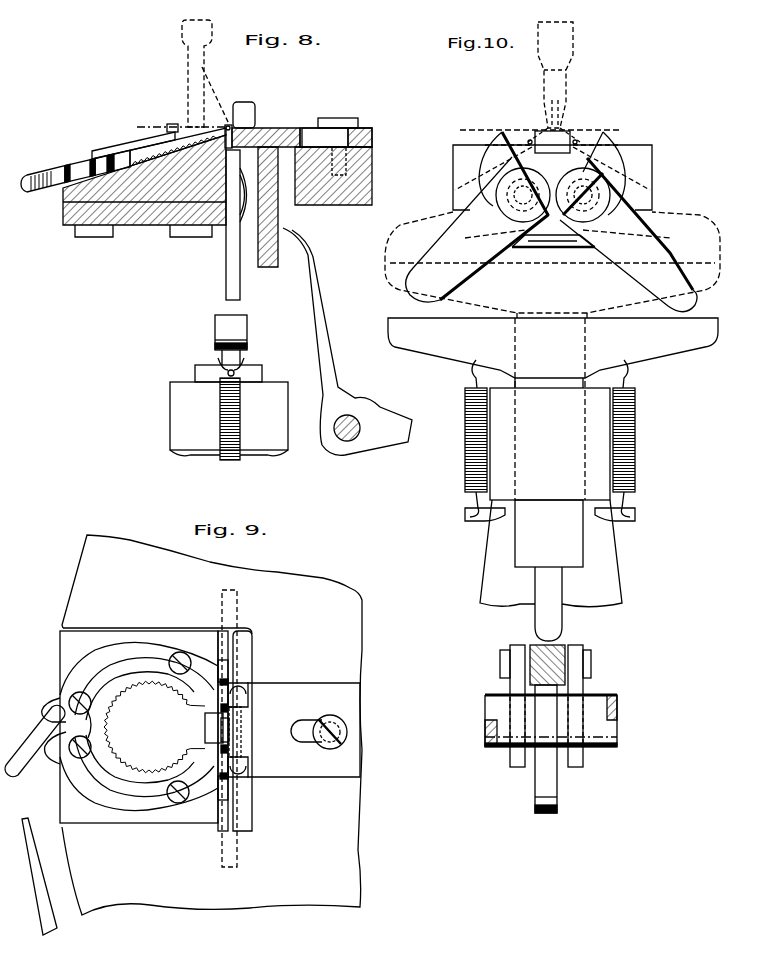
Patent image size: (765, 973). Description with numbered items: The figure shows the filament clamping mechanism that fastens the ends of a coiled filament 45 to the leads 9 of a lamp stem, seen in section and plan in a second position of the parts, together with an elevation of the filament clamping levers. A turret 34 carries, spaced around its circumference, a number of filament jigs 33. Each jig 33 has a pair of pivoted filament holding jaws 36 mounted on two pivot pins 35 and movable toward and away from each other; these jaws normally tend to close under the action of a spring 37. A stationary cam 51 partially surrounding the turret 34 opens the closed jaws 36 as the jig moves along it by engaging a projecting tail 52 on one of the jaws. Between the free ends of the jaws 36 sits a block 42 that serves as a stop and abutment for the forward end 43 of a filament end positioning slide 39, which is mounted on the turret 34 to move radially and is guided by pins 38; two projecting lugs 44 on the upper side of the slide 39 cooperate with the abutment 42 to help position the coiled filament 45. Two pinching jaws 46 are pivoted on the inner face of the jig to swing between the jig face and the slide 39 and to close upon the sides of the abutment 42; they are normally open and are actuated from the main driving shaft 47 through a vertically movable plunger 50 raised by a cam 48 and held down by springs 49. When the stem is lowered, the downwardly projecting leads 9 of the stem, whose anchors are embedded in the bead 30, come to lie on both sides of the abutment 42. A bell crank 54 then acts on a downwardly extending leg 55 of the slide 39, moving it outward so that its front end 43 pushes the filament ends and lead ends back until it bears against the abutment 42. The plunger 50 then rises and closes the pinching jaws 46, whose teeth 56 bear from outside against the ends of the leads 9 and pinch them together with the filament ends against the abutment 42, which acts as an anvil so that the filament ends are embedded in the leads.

In FIG. 9, the leads 9 is at (236, 712).
In FIG. 10, the bead 30 is at (566, 124).
In FIG. 8, the filament jig 33 is at (63, 199).
In FIG. 10, the filament jig 33 is at (453, 158).
In FIG. 9, the filament jig 33 is at (66, 652).
In FIG. 8, the turret 34 is at (332, 206).
In FIG. 9, the turret 34 is at (85, 548).
In FIG. 8, the pivot pins 35 is at (80, 166).
In FIG. 9, the pivot pins 35 is at (50, 706).
In FIG. 8, the filament holding jaws 36 is at (110, 154).
In FIG. 9, the filament holding jaws 36 is at (192, 657).
In FIG. 8, the spring 37 is at (120, 148).
In FIG. 9, the spring 37 is at (142, 650).
In FIG. 8, the pins 38 is at (335, 122).
In FIG. 9, the pins 38 is at (332, 750).
In FIG. 8, the filament end positioning slide 39 is at (290, 130).
In FIG. 9, the filament end positioning slide 39 is at (312, 690).
In FIG. 10, the block 42 is at (552, 154).
In FIG. 9, the block 42 is at (204, 727).
In FIG. 8, the forward end 43 is at (240, 130).
In FIG. 9, the forward end 43 is at (236, 740).
In FIG. 8, the projecting lugs 44 is at (249, 105).
In FIG. 9, the projecting lugs 44 is at (247, 692).
In FIG. 8, the coiled filament 45 is at (150, 158).
In FIG. 9, the coiled filament 45 is at (148, 687).
In FIG. 8, the pinching jaws 46 is at (225, 256).
In FIG. 10, the pinching jaws 46 is at (497, 185).
In FIG. 10, the main driving shaft 47 is at (600, 748).
In FIG. 10, the cam 48 is at (558, 803).
In FIG. 8, the springs 49 is at (240, 420).
In FIG. 10, the springs 49 is at (650, 438).
In FIG. 8, the plunger 50 is at (247, 333).
In FIG. 10, the plunger 50 is at (690, 345).
In FIG. 9, the stationary cam 51 is at (50, 920).
In FIG. 8, the projecting tail 52 is at (31, 173).
In FIG. 9, the projecting tail 52 is at (28, 782).
In FIG. 8, the bell crank 54 is at (338, 400).
In FIG. 8, the leg 55 is at (270, 268).
In FIG. 8, the teeth 56 is at (228, 123).
In FIG. 10, the teeth 56 is at (502, 134).
In FIG. 9, the teeth 56 is at (228, 688).